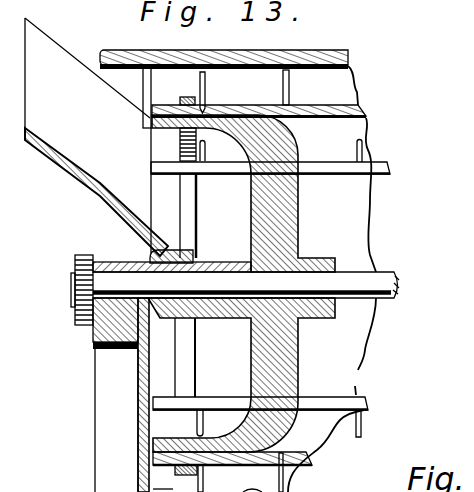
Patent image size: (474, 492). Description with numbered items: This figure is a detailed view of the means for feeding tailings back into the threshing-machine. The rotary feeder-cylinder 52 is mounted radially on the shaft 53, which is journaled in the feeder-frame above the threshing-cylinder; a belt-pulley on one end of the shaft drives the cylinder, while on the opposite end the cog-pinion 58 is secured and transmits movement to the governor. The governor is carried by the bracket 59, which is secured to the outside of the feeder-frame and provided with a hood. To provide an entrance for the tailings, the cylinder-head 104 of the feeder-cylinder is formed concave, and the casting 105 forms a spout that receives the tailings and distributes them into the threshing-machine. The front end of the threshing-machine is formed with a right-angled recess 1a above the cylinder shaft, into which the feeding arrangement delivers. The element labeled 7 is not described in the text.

The top plate 7 is at (291, 53).
The rotary feeder-cylinder 52 is at (379, 230).
The shaft 53 is at (388, 285).
The cog-pinion 58 is at (82, 312).
The bracket 59 is at (100, 402).
The cylinder-head 104 is at (214, 283).
The casting 105 is at (96, 137).
The right-angled recess 1a is at (308, 450).